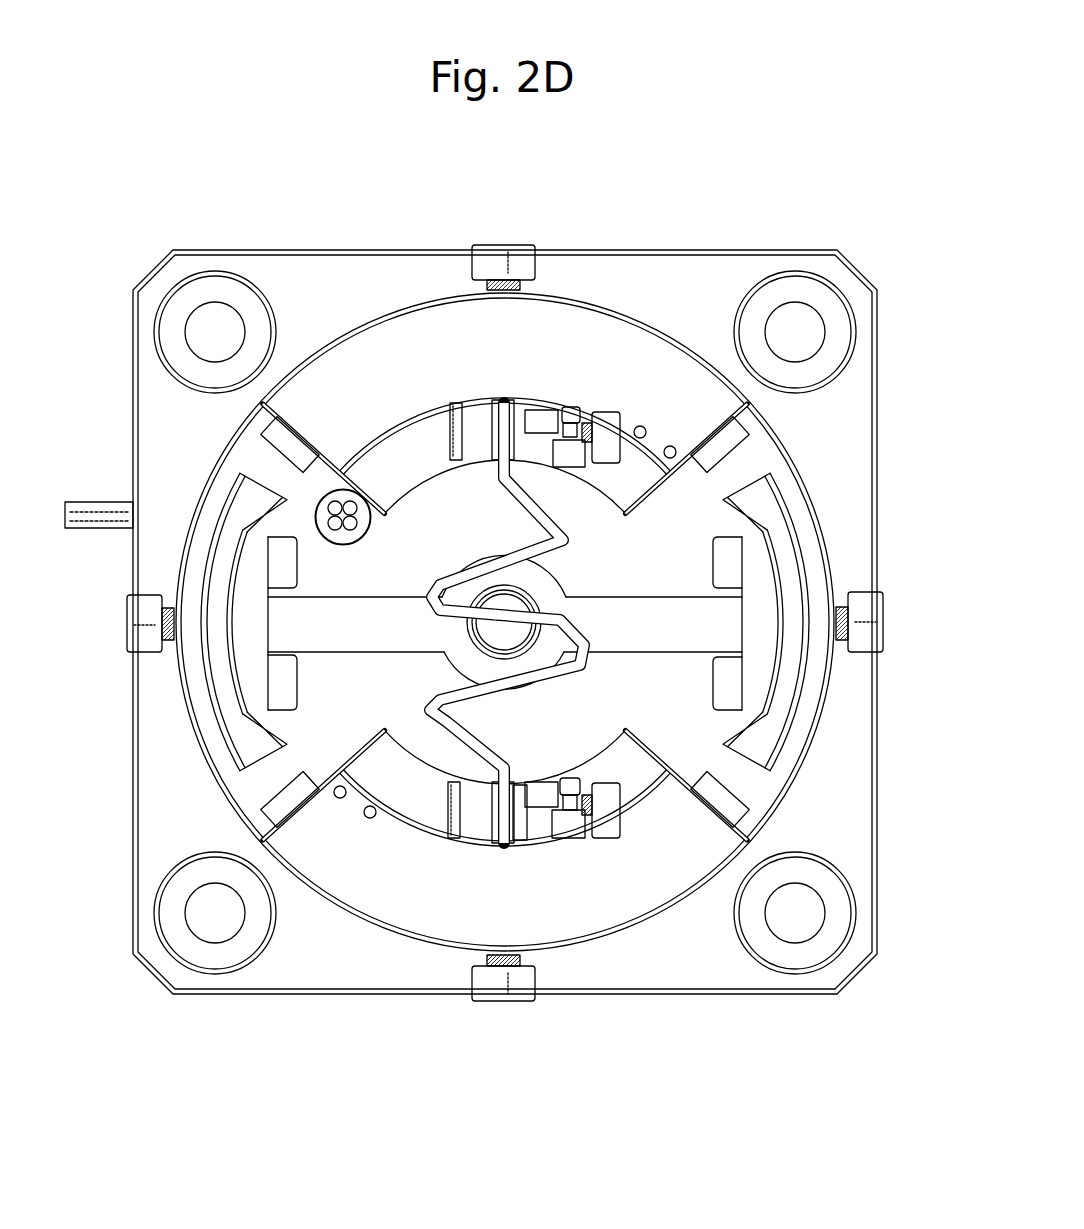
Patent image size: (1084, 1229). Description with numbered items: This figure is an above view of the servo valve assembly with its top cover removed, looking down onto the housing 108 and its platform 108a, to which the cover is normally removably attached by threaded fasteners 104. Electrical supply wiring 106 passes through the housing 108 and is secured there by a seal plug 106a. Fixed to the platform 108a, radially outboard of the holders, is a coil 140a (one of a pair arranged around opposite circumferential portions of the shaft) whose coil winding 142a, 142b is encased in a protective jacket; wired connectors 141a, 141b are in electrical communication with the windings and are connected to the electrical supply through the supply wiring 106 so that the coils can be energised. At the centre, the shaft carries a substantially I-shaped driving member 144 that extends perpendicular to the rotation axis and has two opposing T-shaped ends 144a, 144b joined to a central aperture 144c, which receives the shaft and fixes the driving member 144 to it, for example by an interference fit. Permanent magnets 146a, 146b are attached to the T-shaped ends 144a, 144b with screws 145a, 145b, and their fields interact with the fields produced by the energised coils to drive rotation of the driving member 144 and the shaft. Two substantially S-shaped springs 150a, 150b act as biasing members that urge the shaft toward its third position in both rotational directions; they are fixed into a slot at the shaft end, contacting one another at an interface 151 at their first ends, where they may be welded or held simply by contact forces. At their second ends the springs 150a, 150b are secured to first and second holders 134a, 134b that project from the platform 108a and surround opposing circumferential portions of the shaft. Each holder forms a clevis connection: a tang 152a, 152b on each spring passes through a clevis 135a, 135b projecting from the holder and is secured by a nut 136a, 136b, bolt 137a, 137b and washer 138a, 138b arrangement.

The threaded fasteners 104 is at (497, 265).
The electrical supply wiring 106 is at (90, 505).
The seal plug 106a is at (338, 500).
The housing 108 is at (160, 752).
The platform 108a is at (333, 378).
The first holder 134a is at (398, 335).
The second holder 134b is at (372, 765).
The clevis 135a is at (458, 430).
The clevis 135b is at (458, 840).
The nut 136a is at (572, 410).
The nut 136b is at (572, 780).
The bolt 137a is at (606, 430).
The bolt 137b is at (607, 838).
The washer 138a is at (565, 452).
The washer 138b is at (535, 810).
The coil 140a is at (712, 398).
The wired connector 141a is at (670, 446).
The wired connector 141b is at (370, 818).
The coil winding 142a is at (287, 437).
The coil winding 142b is at (722, 795).
The driving member 144 is at (385, 640).
The T-shaped end 144a is at (260, 650).
The T-shaped end 144b is at (760, 650).
The central aperture 144c is at (528, 590).
The screws 145a is at (282, 562).
The screws 145b is at (735, 560).
The permanent magnet 146a is at (240, 508).
The permanent magnet 146b is at (765, 500).
The first spring 150a is at (565, 520).
The second spring 150b is at (477, 730).
The interface 151 is at (500, 625).
The tang 152a is at (503, 398).
The tang 152b is at (505, 845).